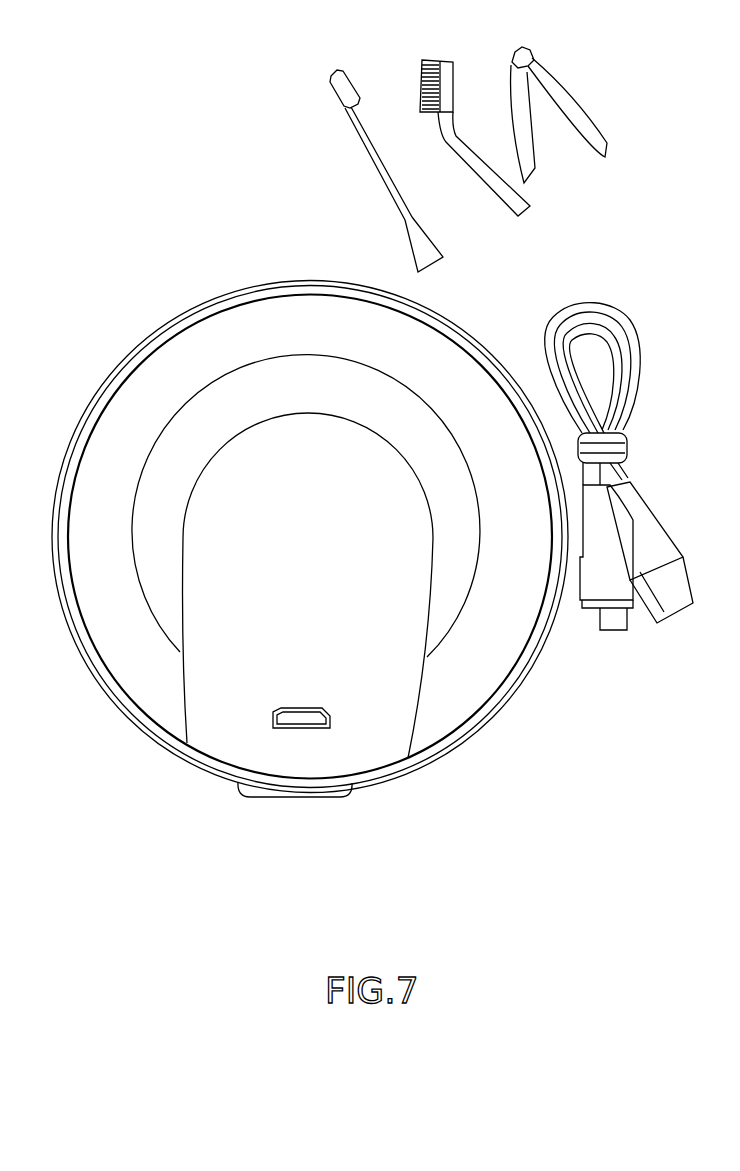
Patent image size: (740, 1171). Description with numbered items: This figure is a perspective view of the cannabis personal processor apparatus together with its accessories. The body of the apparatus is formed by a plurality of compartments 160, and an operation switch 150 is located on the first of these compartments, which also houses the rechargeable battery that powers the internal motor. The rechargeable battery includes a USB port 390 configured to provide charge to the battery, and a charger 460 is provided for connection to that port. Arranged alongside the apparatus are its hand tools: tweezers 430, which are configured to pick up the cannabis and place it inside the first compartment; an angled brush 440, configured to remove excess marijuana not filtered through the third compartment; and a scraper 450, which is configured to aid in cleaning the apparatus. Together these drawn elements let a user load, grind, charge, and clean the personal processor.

The operation switch 150 is at (348, 796).
The plurality of compartments 160 is at (460, 712).
The USB port 390 is at (273, 717).
The tweezers 430 is at (572, 90).
The angled brush 440 is at (527, 213).
The scraper 450 is at (347, 90).
The charger 460 is at (648, 510).